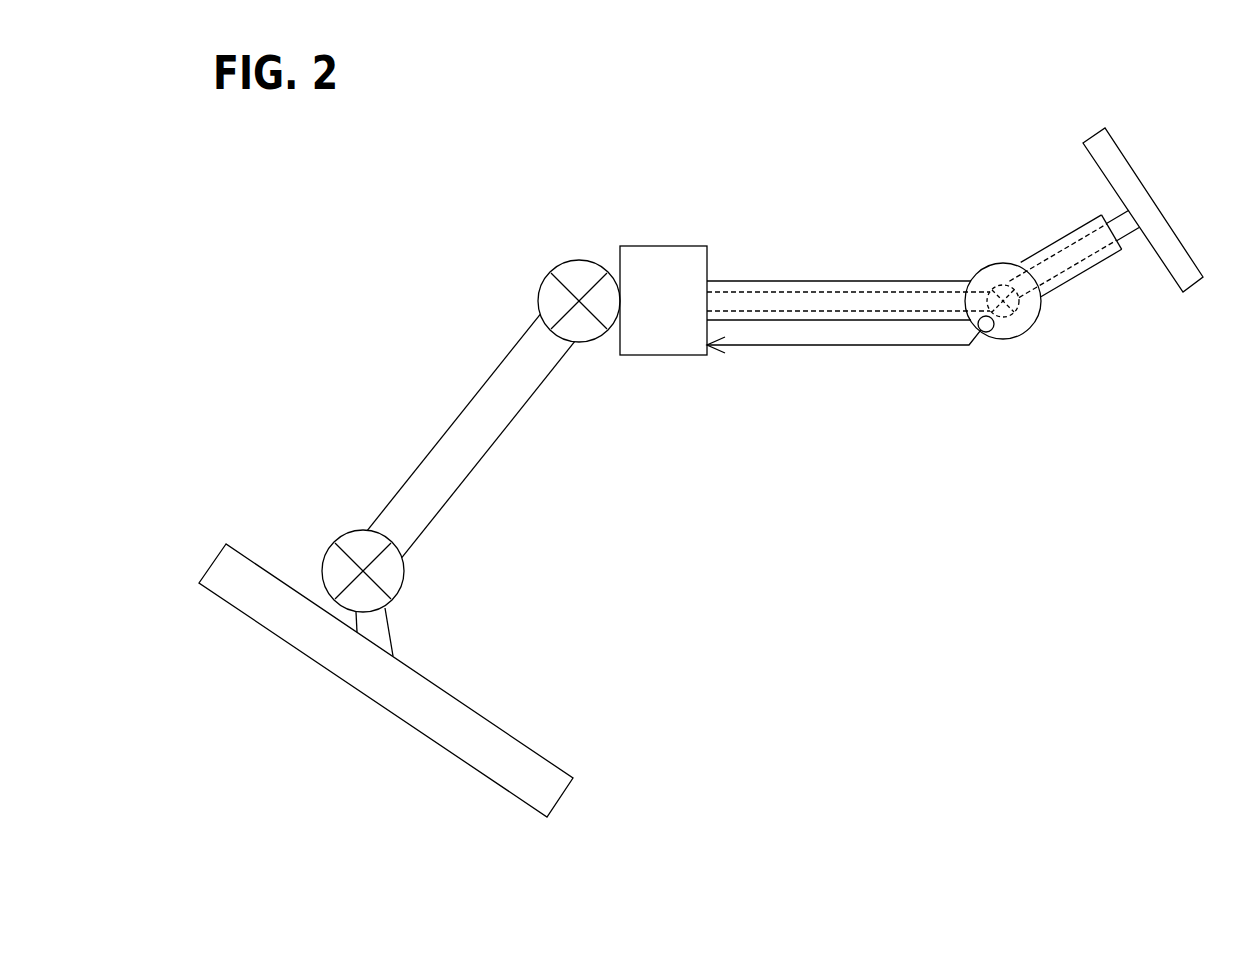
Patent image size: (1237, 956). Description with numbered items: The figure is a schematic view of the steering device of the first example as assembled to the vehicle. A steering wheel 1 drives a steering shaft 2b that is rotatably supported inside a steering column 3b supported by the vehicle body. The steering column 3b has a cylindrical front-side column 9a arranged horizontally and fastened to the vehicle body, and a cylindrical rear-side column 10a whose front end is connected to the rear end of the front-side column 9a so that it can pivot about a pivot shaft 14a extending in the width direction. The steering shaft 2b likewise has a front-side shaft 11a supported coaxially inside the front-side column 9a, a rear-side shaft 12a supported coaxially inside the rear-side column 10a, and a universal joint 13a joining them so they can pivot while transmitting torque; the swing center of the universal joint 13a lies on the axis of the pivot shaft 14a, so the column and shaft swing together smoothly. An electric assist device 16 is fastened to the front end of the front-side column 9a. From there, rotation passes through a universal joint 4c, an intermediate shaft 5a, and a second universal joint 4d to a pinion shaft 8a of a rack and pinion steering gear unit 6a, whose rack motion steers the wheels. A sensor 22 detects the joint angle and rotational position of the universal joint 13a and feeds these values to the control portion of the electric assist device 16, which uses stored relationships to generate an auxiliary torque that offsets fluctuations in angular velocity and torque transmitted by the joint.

The steering wheel 1 is at (1148, 207).
The steering shaft 2b is at (1133, 230).
The steering column 3b is at (924, 298).
The universal joint 4c is at (575, 273).
The universal joint 4d is at (353, 550).
The intermediate shaft 5a is at (473, 417).
The rack and pinion steering gear unit 6a is at (417, 712).
The pinion shaft 8a is at (377, 630).
The front-side column 9a is at (807, 297).
The rear-side column 10a is at (1082, 240).
The front-side shaft 11a is at (863, 300).
The rear-side shaft 12a is at (1070, 265).
The universal joint 13a is at (1002, 339).
The pivot shaft 14a is at (1003, 298).
The electric assist device 16 is at (663, 265).
The sensor 22 is at (984, 335).